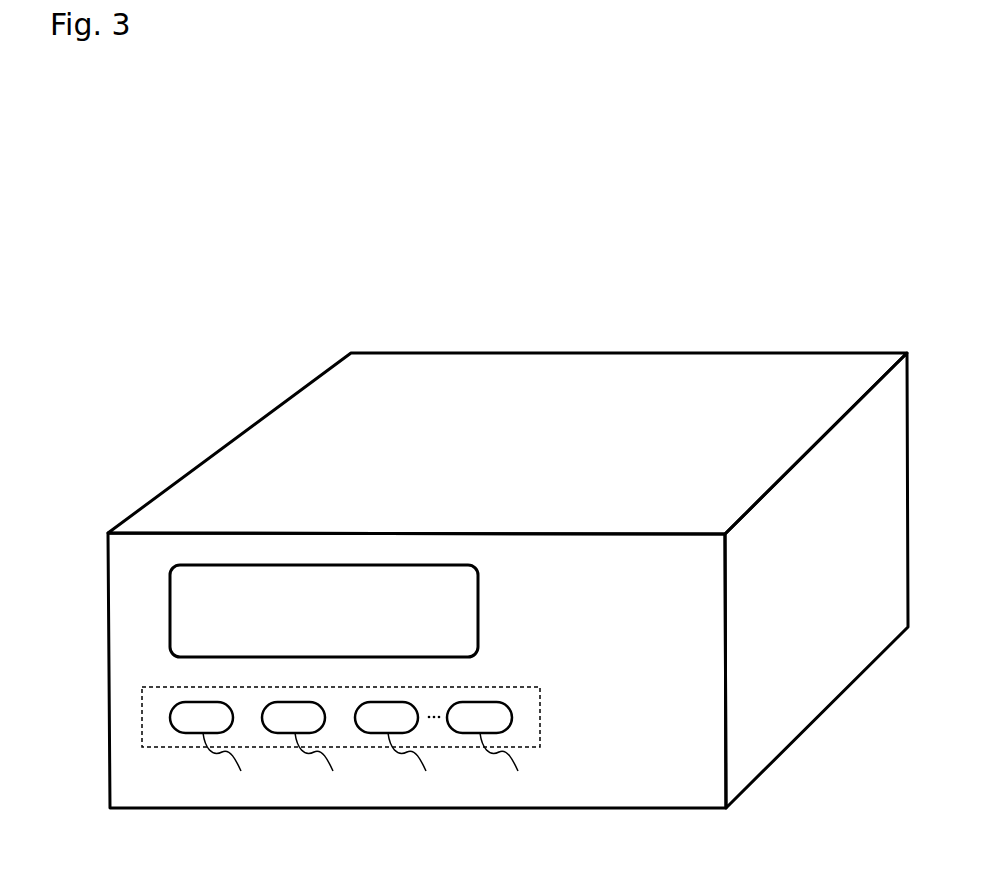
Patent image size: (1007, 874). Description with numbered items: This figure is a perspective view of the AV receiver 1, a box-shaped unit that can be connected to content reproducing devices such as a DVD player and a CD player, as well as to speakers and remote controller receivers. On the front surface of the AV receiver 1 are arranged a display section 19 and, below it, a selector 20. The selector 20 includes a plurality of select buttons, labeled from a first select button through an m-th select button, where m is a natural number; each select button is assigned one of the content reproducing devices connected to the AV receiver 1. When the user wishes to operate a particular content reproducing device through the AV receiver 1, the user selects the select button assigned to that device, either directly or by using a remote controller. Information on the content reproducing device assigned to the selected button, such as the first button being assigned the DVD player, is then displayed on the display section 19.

The AV receiver 1 is at (629, 322).
The display section 19 is at (478, 610).
The selector 20 is at (540, 717).